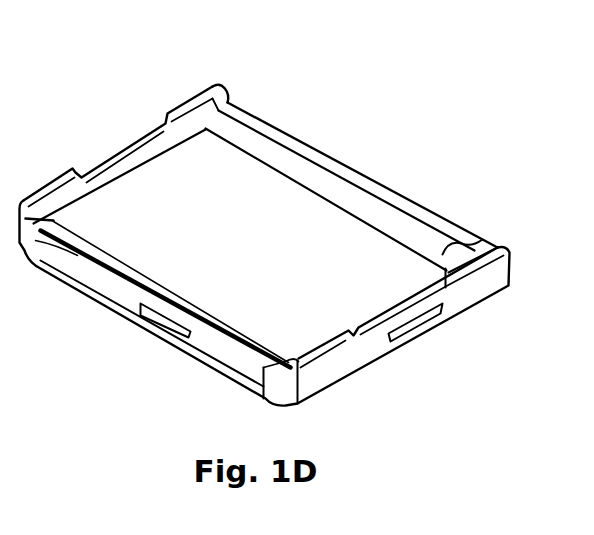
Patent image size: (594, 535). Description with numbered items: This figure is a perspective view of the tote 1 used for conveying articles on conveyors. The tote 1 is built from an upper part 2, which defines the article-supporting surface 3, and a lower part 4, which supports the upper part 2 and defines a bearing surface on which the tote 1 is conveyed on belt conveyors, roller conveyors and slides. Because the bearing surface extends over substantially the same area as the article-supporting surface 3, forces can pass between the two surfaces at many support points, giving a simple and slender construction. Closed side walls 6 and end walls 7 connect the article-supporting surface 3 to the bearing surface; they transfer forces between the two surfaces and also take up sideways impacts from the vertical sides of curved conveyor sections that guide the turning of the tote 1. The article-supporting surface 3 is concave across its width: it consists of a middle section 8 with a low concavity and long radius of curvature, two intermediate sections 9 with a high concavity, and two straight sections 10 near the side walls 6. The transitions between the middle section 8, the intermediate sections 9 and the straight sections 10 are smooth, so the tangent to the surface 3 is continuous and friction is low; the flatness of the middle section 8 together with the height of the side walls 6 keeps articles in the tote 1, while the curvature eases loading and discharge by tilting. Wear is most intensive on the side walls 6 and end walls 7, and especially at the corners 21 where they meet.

The tote 1 is at (372, 114).
The upper part 2 is at (345, 225).
The article-supporting surface 3 is at (190, 236).
The lower part 4 is at (240, 380).
The side walls 6 is at (120, 290).
The end walls 7 is at (485, 283).
The middle section 8 is at (303, 279).
The intermediate sections 9 is at (440, 252).
The straight sections 10 is at (444, 240).
The corners 21 is at (235, 82).